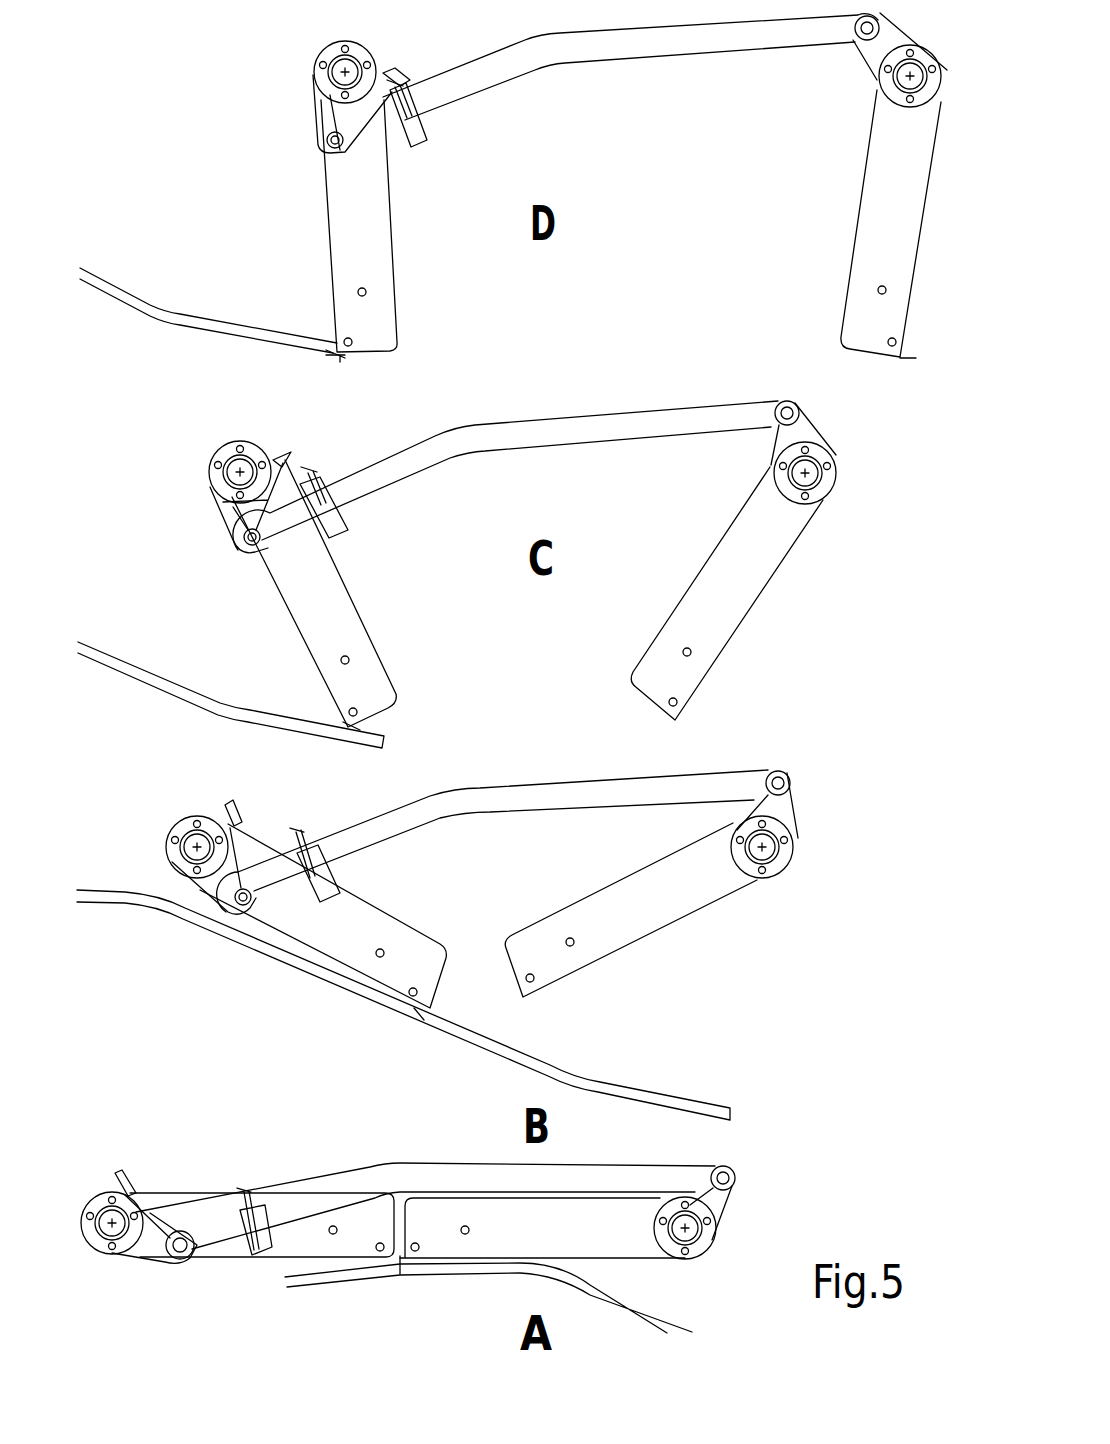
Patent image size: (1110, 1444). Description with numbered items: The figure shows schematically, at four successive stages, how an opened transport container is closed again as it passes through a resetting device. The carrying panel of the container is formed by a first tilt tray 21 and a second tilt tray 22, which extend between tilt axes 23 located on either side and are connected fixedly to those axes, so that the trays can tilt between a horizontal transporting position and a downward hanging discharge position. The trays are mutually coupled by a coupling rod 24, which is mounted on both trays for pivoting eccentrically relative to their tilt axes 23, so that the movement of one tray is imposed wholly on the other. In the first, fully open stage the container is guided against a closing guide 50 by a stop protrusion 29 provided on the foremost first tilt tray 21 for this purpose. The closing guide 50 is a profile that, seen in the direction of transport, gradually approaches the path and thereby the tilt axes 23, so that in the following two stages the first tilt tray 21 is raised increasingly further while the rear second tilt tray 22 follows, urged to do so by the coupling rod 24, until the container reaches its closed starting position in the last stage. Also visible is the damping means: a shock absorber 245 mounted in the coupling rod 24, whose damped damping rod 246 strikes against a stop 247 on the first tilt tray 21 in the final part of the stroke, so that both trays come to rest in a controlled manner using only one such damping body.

The first tilt tray 21 is at (345, 222).
The second tilt tray 22 is at (863, 265).
The tilt axes 23 is at (330, 68).
The coupling rod 24 is at (585, 50).
The stop protrusion 29 is at (340, 355).
The closing guide 50 is at (160, 308).
The shock absorber 245 is at (420, 125).
The damping rod 246 is at (412, 84).
The stop 247 is at (400, 70).